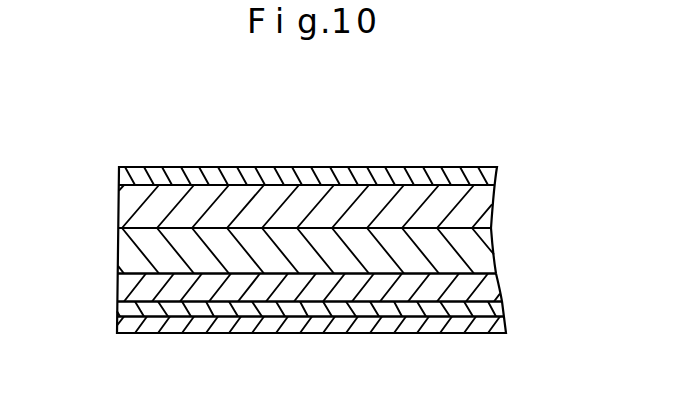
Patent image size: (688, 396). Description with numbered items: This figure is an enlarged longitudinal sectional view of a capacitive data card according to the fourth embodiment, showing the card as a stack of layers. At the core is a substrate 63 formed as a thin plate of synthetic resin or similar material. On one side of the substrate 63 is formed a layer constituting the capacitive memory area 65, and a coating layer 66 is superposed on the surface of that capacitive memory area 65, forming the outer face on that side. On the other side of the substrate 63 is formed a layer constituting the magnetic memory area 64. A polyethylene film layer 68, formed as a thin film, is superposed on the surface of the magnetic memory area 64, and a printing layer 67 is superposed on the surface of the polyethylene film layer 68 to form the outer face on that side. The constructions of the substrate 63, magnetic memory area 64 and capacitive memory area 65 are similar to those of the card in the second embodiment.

The substrate 63 is at (487, 247).
The magnetic memory area 64 is at (130, 310).
The capacitive memory area 65 is at (175, 207).
The coating layer 66 is at (481, 176).
The printing layer 67 is at (150, 333).
The polyethylene film layer 68 is at (488, 292).